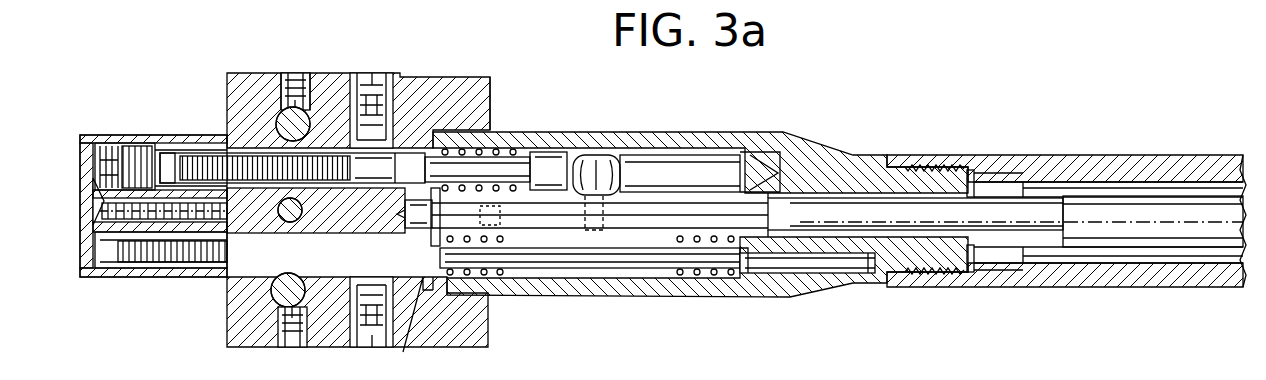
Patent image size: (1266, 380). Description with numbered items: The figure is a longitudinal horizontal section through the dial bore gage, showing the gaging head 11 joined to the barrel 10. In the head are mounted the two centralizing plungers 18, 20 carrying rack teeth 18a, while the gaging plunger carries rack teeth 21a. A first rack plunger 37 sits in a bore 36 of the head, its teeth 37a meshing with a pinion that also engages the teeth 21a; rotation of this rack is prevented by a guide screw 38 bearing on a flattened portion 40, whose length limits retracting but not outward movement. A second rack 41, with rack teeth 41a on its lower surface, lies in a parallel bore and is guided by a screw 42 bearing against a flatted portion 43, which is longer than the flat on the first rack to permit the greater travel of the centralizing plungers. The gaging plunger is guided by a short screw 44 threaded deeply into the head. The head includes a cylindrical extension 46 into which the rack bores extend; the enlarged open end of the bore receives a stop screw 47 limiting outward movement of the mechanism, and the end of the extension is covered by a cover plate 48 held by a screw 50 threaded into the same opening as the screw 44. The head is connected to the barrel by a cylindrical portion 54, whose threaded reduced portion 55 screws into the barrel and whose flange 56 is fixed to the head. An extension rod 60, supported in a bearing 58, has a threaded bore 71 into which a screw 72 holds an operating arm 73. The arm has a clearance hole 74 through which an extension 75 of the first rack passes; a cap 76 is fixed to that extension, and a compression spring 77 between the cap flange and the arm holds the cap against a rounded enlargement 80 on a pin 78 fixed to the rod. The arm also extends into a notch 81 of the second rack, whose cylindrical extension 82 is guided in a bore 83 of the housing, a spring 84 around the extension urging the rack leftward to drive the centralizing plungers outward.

The barrel 10 is at (1038, 162).
The gaging head 11 is at (294, 54).
The centralizing plunger 18 is at (304, 108).
The rack teeth 18a is at (277, 78).
The centralizing plunger 20 is at (283, 316).
The rack teeth 21a is at (302, 210).
The bore 36 is at (175, 137).
The first rack plunger 37 is at (392, 176).
The teeth 37a is at (213, 157).
The guide screw 38 is at (373, 100).
The flattened portion 40 is at (330, 84).
The second rack 41 is at (112, 253).
The rack teeth 41a is at (170, 283).
The screw 42 is at (362, 343).
The flatted portion 43 is at (334, 348).
The screw 44 is at (97, 223).
The cylindrical extension 46 is at (113, 137).
The stop screw 47 is at (123, 150).
The cover plate 48 is at (80, 153).
The screw 50 is at (92, 203).
The cylindrical portion 54 is at (618, 138).
The threaded reduced portion 55 is at (933, 167).
The flange 56 is at (490, 80).
The bearing 58 is at (987, 272).
The extension rod 60 is at (812, 212).
The threaded bore 71 is at (490, 212).
The screw 72 is at (402, 209).
The operating arm 73 is at (407, 241).
The clearance hole 74 is at (488, 148).
The extension 75 is at (548, 170).
The cap 76 is at (575, 162).
The compression spring 77 is at (512, 167).
The pin 78 is at (630, 156).
The rounded enlargement 80 is at (607, 176).
The notch 81 is at (404, 350).
The cylindrical extension 82 is at (595, 262).
The bore 83 is at (803, 274).
The spring 84 is at (688, 277).